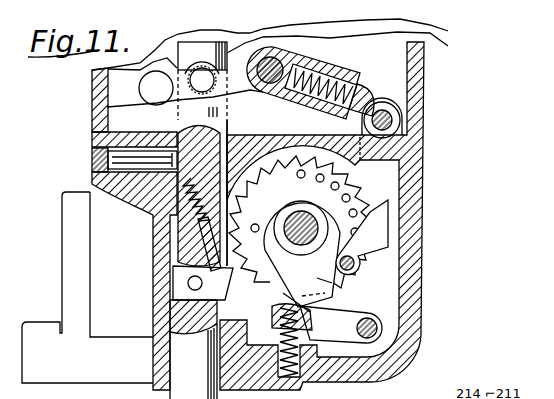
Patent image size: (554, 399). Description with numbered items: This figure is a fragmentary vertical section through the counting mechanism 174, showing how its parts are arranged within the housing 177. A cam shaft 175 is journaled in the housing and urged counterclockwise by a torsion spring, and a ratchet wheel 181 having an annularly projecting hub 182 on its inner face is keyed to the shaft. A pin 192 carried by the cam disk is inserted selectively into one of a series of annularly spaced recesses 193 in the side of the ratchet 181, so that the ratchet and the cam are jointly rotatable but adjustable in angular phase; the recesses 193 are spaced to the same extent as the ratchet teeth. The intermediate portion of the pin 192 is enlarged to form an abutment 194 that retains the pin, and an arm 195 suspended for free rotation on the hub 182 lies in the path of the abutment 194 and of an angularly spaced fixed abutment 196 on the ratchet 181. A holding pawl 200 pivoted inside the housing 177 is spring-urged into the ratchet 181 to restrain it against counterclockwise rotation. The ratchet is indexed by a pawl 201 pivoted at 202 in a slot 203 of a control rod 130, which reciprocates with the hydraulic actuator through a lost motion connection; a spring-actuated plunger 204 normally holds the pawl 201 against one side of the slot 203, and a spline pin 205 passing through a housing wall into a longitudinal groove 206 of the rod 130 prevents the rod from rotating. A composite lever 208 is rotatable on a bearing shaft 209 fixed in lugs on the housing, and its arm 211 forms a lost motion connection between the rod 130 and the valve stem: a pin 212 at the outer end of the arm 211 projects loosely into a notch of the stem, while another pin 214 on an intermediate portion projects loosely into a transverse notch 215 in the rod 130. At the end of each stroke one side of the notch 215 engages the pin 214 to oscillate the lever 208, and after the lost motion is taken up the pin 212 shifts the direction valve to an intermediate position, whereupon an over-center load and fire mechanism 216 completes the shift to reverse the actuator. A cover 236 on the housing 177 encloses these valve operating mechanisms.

The control rod 130 is at (182, 353).
The counting mechanism 174 is at (428, 147).
The cam shaft 175 is at (340, 236).
The housing 177 is at (325, 231).
The ratchet wheel 181 is at (363, 178).
The hub 182 is at (291, 210).
The pin 192 is at (352, 277).
The recesses 193 is at (388, 193).
The abutment 194 is at (350, 303).
The arm 195 is at (357, 317).
The fixed abutment 196 is at (255, 232).
The holding pawl 200 is at (340, 318).
The pawl 201 is at (217, 289).
The pivot 202 is at (188, 283).
The slot 203 is at (180, 267).
The spring-actuated plunger 204 is at (207, 243).
The spline pin 205 is at (140, 162).
The longitudinal groove 206 is at (175, 216).
The composite lever 208 is at (323, 51).
The bearing shaft 209 is at (446, 46).
The lever arm 211 is at (142, 94).
The pin 212 is at (178, 102).
The pin 214 is at (108, 84).
The transverse notch 215 is at (440, 30).
The over-center load and fire mechanism 216 is at (377, 84).
The cover 236 is at (420, 101).